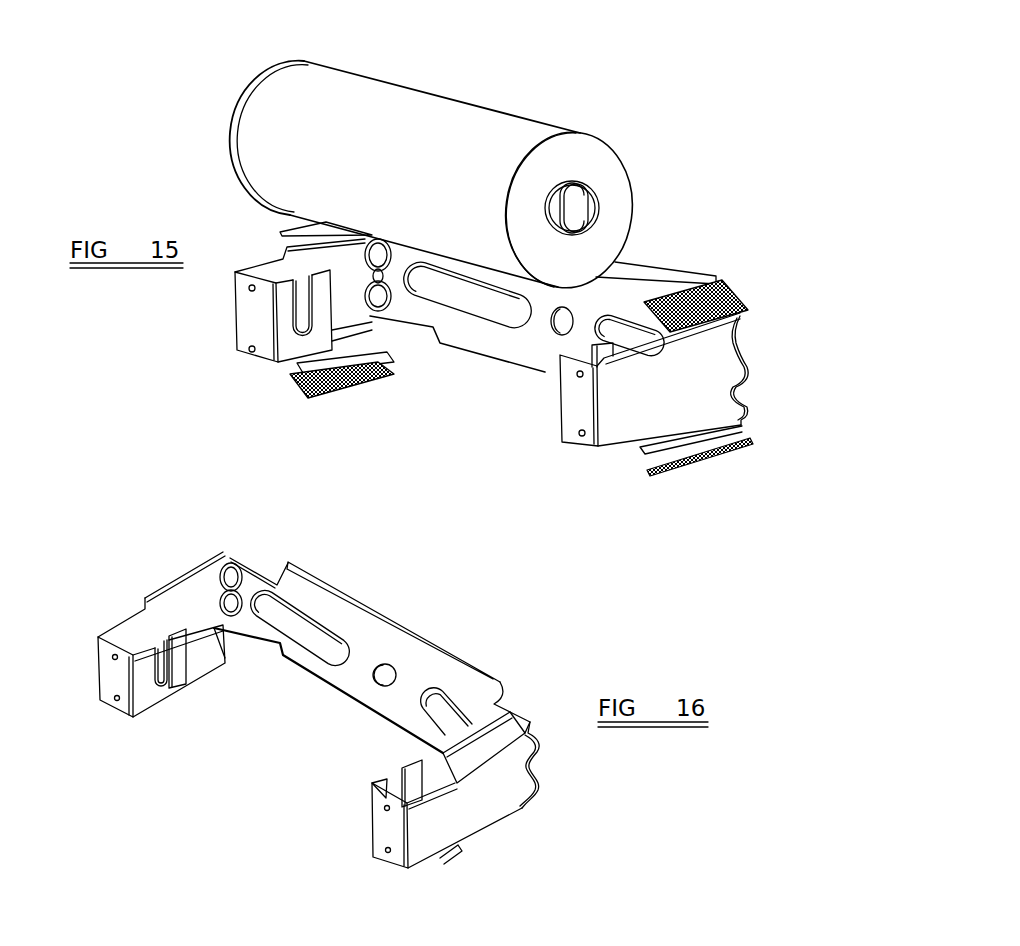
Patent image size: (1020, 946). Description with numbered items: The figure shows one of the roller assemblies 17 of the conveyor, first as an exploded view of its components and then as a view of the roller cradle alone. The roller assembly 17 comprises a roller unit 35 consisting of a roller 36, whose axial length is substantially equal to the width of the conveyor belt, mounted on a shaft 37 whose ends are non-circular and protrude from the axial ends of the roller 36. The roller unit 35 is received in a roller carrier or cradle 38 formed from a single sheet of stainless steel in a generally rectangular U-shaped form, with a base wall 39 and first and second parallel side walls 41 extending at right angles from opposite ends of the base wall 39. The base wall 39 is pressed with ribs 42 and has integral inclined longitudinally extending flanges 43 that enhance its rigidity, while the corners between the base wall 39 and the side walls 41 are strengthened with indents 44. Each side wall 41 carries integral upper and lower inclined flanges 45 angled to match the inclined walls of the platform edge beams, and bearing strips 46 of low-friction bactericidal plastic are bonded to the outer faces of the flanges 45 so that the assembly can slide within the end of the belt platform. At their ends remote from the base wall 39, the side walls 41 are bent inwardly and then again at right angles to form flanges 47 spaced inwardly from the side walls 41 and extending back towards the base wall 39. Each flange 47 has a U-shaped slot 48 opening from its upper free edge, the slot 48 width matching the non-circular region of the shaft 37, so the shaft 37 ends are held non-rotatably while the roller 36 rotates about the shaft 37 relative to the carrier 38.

In FIG. 15, the roller assembly 17 is at (760, 321).
In FIG. 15, the roller unit 35 is at (446, 77).
In FIG. 15, the roller 36 is at (594, 153).
In FIG. 15, the shaft 37 is at (582, 207).
In FIG. 15, the roller carrier or cradle 38 is at (510, 348).
In FIG. 16, the roller carrier or cradle 38 is at (264, 566).
In FIG. 15, the base wall 39 is at (547, 373).
In FIG. 16, the base wall 39 is at (378, 640).
In FIG. 15, the side walls 41 is at (269, 257).
In FIG. 16, the side walls 41 is at (140, 611).
In FIG. 15, the ribs 42 is at (480, 302).
In FIG. 16, the ribs 42 is at (310, 630).
In FIG. 15, the inclined longitudinally extending flanges 43 is at (654, 262).
In FIG. 16, the inclined longitudinally extending flanges 43 is at (418, 640).
In FIG. 15, the indents 44 is at (380, 298).
In FIG. 16, the indents 44 is at (379, 685).
In FIG. 15, the upper and lower inclined flanges 45 is at (742, 419).
In FIG. 16, the upper and lower inclined flanges 45 is at (195, 563).
In FIG. 15, the bearing strips 46 is at (300, 382).
In FIG. 16, the flanges 47 is at (158, 683).
In FIG. 15, the U-shaped slot 48 is at (602, 355).
In FIG. 16, the U-shaped slot 48 is at (176, 688).